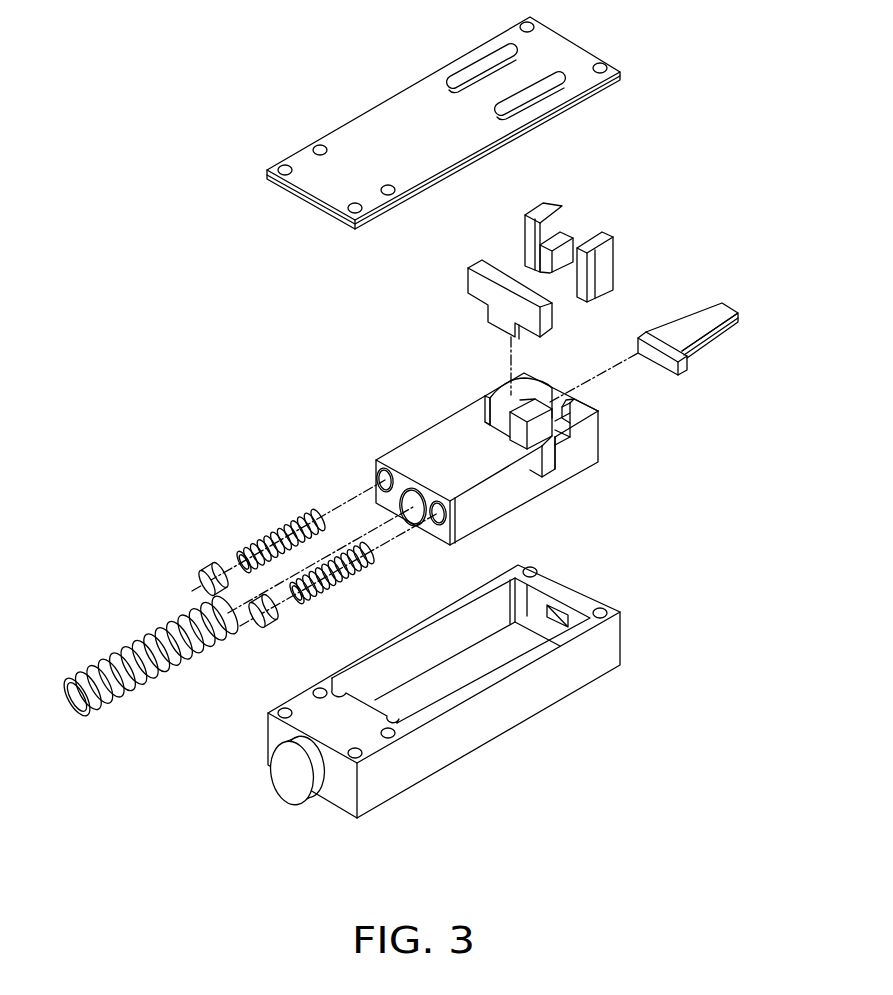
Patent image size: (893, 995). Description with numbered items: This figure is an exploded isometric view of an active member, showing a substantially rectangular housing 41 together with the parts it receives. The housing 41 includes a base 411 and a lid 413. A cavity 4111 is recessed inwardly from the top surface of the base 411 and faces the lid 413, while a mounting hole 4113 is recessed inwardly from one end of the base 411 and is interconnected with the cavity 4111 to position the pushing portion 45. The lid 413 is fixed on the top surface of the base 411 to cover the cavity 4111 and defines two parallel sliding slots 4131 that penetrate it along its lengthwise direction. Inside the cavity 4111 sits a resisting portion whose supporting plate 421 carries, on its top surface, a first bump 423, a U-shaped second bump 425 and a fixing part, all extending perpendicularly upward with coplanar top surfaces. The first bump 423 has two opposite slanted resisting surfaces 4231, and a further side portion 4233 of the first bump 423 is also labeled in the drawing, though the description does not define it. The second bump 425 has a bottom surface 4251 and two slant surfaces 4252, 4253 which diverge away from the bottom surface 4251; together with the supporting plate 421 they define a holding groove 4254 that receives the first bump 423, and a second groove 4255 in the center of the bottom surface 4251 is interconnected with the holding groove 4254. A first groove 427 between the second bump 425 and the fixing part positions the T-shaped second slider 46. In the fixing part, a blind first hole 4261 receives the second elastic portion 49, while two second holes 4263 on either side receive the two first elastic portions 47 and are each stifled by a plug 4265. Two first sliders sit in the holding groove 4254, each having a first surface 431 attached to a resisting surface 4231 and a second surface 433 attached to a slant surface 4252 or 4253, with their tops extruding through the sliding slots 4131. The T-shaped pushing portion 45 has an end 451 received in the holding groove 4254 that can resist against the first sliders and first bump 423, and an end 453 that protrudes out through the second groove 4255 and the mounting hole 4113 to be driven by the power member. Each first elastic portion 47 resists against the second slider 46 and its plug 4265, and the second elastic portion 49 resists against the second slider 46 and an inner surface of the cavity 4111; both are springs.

The housing 41 is at (473, 691).
The base 411 is at (512, 713).
The cavity 4111 is at (418, 692).
The mounting hole 4113 is at (560, 613).
The lid 413 is at (562, 50).
The sliding slot 4131 is at (473, 78).
The supporting plate 421 is at (573, 467).
The first bump 423 is at (530, 415).
The resisting surface 4231 is at (527, 400).
The protrusion side wall 4233 is at (570, 440).
The second bump 425 is at (502, 375).
The bottom surface 4251 is at (582, 397).
The slant surface 4252 is at (503, 402).
The slant surface 4253 is at (545, 430).
The holding groove 4254 is at (560, 418).
The second groove 4255 is at (567, 402).
The first groove 427 is at (550, 463).
The first hole 4261 is at (410, 525).
The second hole 4263 is at (382, 478).
The plug 4265 is at (208, 568).
The first surface 431 is at (563, 248).
The second surface 433 is at (545, 198).
The pushing portion 45 is at (655, 324).
The end 451 is at (648, 338).
The end 453 is at (717, 318).
The second slider 46 is at (475, 285).
The first elastic portion 47 is at (277, 528).
The second elastic portion 49 is at (160, 632).